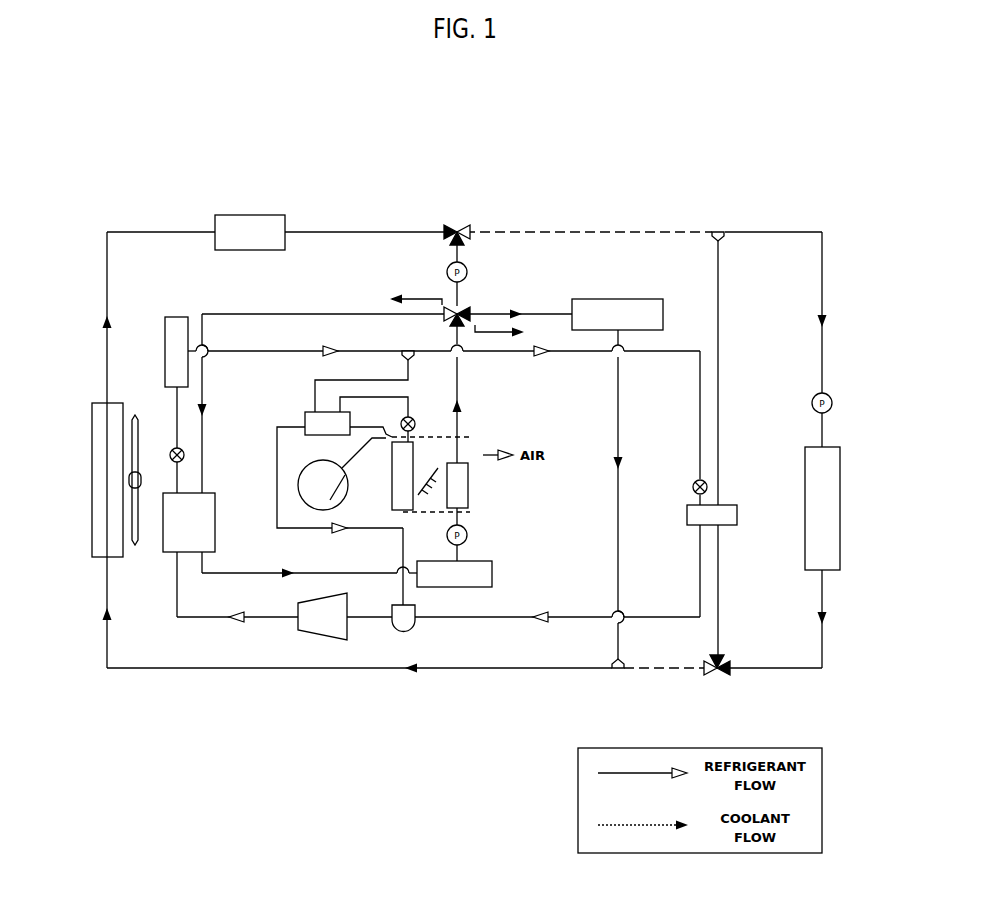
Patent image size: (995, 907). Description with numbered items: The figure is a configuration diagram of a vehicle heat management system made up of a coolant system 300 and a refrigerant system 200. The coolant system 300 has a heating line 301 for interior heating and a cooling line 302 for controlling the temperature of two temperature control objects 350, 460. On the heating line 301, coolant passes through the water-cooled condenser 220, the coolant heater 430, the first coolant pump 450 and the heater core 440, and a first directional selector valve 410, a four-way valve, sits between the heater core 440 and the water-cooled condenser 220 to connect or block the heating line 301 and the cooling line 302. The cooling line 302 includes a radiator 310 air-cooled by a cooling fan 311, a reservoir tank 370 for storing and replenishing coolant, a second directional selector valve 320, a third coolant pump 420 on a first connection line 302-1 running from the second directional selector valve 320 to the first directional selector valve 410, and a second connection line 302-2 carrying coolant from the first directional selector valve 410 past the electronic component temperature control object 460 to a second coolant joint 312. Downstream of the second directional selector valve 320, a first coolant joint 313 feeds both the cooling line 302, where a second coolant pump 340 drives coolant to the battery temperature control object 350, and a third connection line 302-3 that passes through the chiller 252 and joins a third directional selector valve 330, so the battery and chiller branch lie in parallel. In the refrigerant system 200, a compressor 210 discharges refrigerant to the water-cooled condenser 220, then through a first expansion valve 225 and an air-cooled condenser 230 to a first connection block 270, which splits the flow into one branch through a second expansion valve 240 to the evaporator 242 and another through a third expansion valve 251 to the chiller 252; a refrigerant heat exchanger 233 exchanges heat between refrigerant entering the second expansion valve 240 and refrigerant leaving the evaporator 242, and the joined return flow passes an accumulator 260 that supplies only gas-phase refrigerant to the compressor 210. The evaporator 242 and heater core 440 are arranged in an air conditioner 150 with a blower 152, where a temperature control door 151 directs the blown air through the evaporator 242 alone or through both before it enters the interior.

The air conditioner 150 is at (348, 470).
The temperature control door 151 is at (428, 452).
The blower 152 is at (277, 478).
The refrigerant system 200 is at (275, 345).
The compressor 210 is at (322, 640).
The water-cooled condenser 220 is at (163, 545).
The first expansion valve 225 is at (170, 452).
The air-cooled condenser 230 is at (177, 317).
The refrigerant heat exchanger 233 is at (305, 414).
The second expansion valve 240 is at (414, 418).
The evaporator 242 is at (390, 518).
The third expansion valve 251 is at (707, 483).
The chiller 252 is at (737, 520).
The accumulator 260 is at (415, 630).
The first connection block 270 is at (404, 348).
The coolant system 300 is at (800, 115).
The heating line 301 is at (308, 307).
The cooling line 302 is at (652, 226).
The first connection line 302-1 is at (445, 249).
The second connection line 302-2 is at (548, 307).
The third connection line 302-3 is at (724, 298).
The radiator 310 is at (92, 475).
The cooling fan 311 is at (128, 500).
The second coolant joint 312 is at (618, 674).
The first coolant joint 313 is at (718, 226).
The second directional selector valve 320 is at (457, 225).
The third directional selector valve 330 is at (725, 675).
The second coolant pump 340 is at (833, 403).
The temperature control object 350 is at (840, 512).
The reservoir tank 370 is at (247, 215).
The first directional selector valve 410 is at (468, 311).
The third coolant pump 420 is at (467, 272).
The coolant heater 430 is at (492, 575).
The heater core 440 is at (468, 490).
The first coolant pump 450 is at (468, 535).
The temperature control object 460 is at (618, 299).